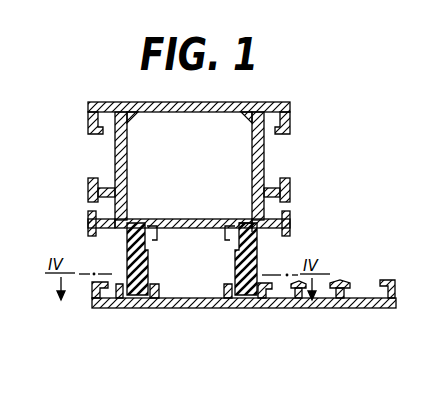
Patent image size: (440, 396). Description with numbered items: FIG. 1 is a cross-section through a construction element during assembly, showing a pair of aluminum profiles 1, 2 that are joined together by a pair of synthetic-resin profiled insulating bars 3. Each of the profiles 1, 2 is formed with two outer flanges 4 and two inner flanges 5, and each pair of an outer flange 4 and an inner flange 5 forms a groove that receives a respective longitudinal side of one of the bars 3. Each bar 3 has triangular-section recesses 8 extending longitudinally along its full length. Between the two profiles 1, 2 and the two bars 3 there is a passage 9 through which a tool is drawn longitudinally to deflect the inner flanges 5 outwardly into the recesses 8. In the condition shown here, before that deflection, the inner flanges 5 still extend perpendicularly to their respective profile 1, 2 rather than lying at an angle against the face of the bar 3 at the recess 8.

The aluminum profile 1 is at (266, 152).
The aluminum profile 2 is at (350, 307).
The profiled insulating bar 3 is at (127, 261).
The outer flange 4 is at (92, 230).
The inner flange 5 is at (158, 232).
The triangular-section recess 8 is at (252, 214).
The passage 9 is at (190, 310).